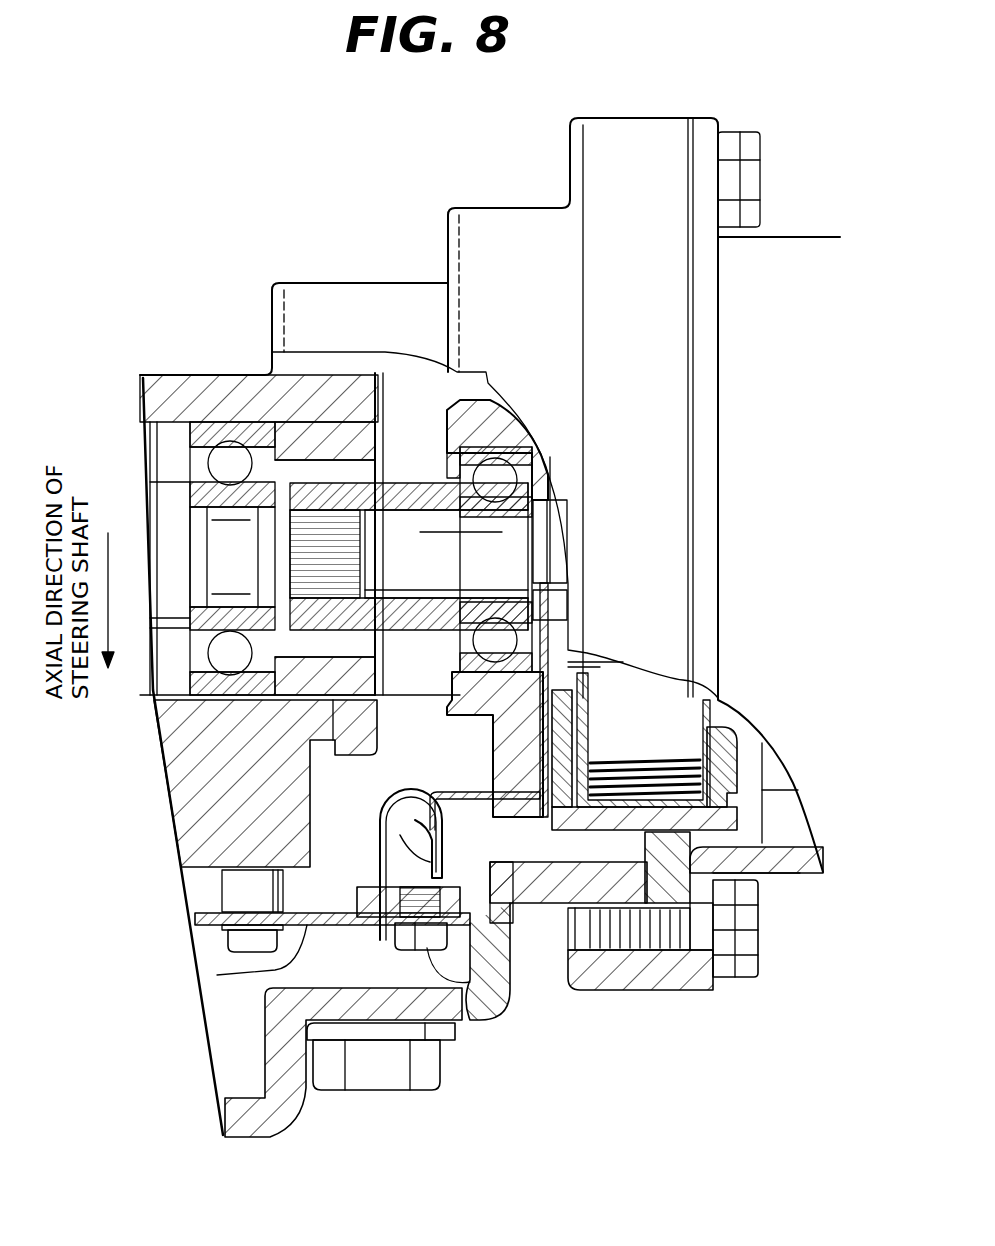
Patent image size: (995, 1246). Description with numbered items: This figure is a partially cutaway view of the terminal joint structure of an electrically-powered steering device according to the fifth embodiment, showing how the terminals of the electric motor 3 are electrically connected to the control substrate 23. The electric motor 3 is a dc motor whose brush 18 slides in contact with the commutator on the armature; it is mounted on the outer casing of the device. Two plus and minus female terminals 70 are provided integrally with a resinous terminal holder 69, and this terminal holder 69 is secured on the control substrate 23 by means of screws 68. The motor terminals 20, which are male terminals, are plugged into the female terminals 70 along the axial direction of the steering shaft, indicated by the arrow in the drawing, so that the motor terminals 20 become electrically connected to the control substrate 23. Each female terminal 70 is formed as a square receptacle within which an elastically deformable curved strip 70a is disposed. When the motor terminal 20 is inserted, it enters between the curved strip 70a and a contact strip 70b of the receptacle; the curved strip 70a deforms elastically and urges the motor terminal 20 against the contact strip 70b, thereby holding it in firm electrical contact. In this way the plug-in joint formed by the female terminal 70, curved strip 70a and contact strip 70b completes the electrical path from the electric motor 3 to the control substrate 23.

The electric motor 3 is at (787, 232).
The brush 18 is at (680, 703).
The motor terminal 20 is at (468, 790).
The control substrate 23 is at (240, 971).
The screw 68 is at (465, 1043).
The terminal holder 69 is at (502, 1000).
The female terminal 70 is at (368, 874).
The curved strip 70a is at (380, 833).
The contact strip 70b is at (520, 907).